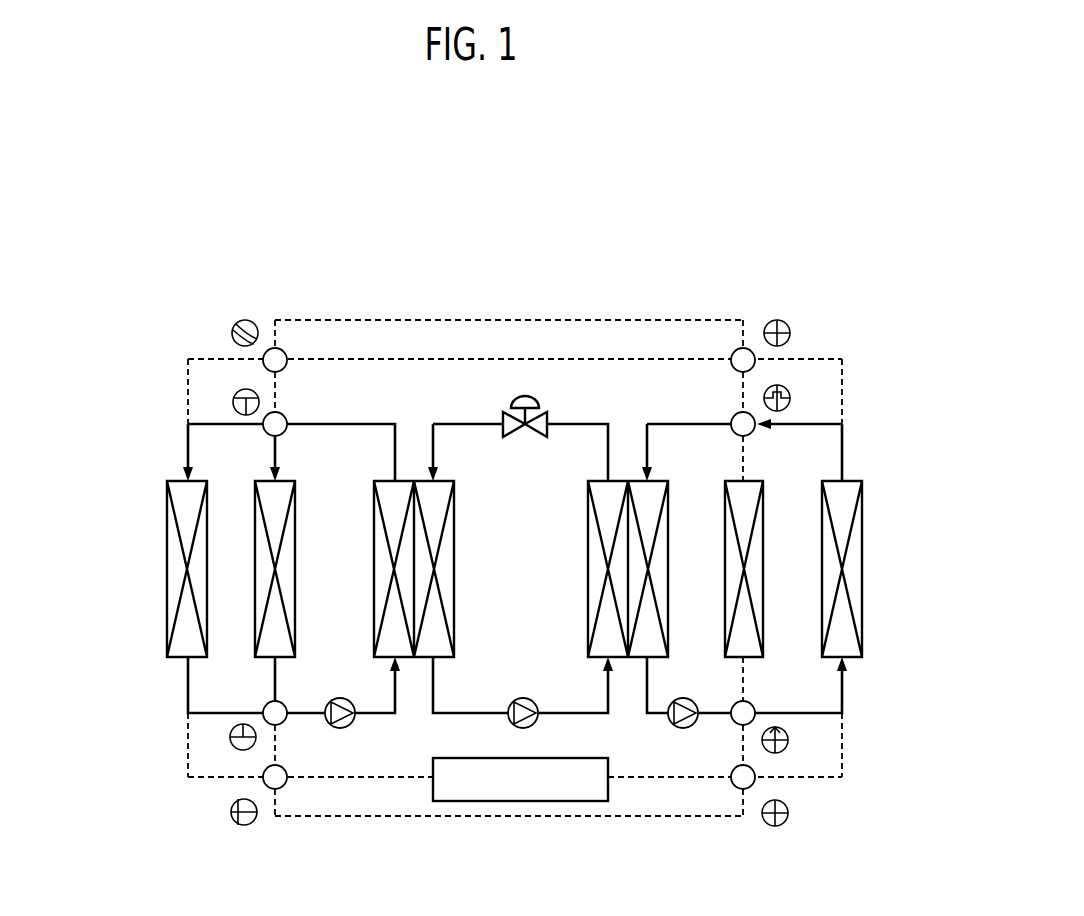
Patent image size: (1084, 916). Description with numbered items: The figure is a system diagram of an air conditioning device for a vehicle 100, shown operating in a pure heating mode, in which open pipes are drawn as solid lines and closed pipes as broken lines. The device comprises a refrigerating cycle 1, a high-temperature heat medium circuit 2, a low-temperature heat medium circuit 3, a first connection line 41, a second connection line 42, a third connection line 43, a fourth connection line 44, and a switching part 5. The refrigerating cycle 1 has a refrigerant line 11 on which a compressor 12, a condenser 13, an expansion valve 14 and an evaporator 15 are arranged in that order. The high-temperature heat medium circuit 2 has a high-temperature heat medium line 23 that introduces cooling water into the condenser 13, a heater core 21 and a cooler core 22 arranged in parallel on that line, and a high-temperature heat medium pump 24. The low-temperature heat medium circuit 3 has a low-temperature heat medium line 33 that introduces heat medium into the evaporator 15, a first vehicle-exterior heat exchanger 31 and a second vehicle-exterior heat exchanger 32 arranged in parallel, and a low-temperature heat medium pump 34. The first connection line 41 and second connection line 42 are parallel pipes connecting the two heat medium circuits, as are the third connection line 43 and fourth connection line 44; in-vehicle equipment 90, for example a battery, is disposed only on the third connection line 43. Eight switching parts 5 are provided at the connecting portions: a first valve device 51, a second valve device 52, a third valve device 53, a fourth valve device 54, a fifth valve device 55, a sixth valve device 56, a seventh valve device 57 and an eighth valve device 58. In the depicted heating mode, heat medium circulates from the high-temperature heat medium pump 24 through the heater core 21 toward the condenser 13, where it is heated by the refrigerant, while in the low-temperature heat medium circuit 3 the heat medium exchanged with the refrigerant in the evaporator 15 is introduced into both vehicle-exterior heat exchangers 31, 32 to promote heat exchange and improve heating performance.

The air conditioning device for a vehicle 100 is at (143, 263).
The refrigerating cycle 1 is at (600, 384).
The high-temperature heat medium circuit 2 is at (913, 391).
The low-temperature heat medium circuit 3 is at (118, 373).
The switching part 5 is at (510, 573).
The refrigerant line 11 is at (455, 424).
The compressor 12 is at (523, 698).
The condenser 13 is at (628, 660).
The expansion valve 14 is at (525, 438).
The evaporator 15 is at (413, 660).
The heater core 21 is at (862, 513).
The cooler core 22 is at (763, 565).
The high-temperature heat medium line 23 is at (690, 423).
The high-temperature heat medium pump 24 is at (686, 698).
The first vehicle-exterior heat exchanger 31 is at (167, 497).
The second vehicle-exterior heat exchanger 32 is at (253, 572).
The low-temperature heat medium line 33 is at (310, 716).
The low-temperature heat medium pump 34 is at (342, 698).
The first connection line 41 is at (339, 320).
The second connection line 42 is at (385, 359).
The third connection line 43 is at (690, 778).
The fourth connection line 44 is at (720, 817).
The first valve device 51 is at (745, 348).
The second valve device 52 is at (755, 431).
The third valve device 53 is at (755, 710).
The fourth valve device 54 is at (753, 786).
The fifth valve device 55 is at (275, 348).
The sixth valve device 56 is at (263, 429).
The seventh valve device 57 is at (263, 708).
The eighth valve device 58 is at (265, 786).
The in-vehicle equipment 90 is at (562, 803).